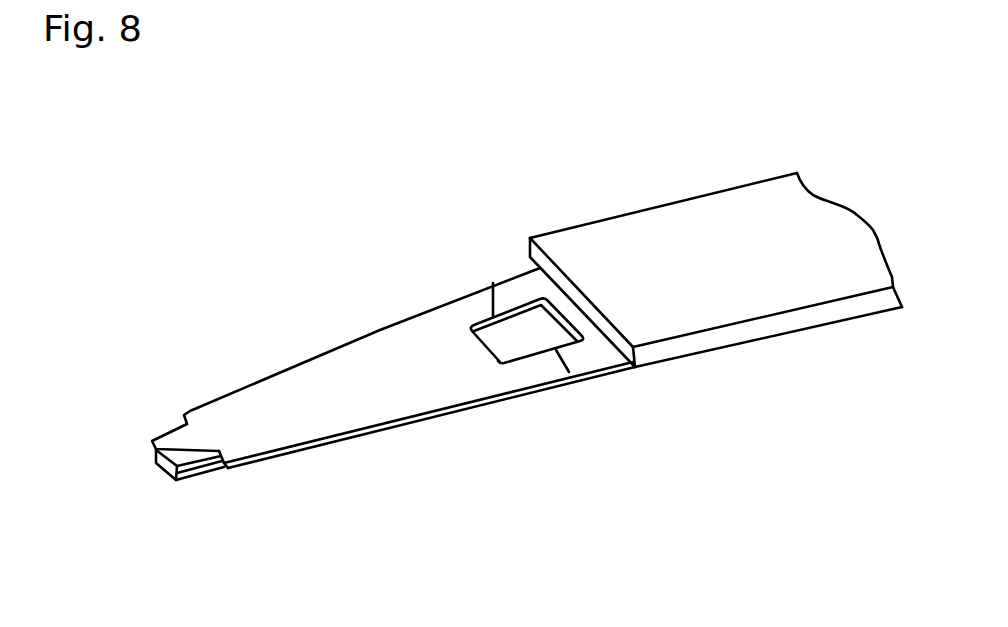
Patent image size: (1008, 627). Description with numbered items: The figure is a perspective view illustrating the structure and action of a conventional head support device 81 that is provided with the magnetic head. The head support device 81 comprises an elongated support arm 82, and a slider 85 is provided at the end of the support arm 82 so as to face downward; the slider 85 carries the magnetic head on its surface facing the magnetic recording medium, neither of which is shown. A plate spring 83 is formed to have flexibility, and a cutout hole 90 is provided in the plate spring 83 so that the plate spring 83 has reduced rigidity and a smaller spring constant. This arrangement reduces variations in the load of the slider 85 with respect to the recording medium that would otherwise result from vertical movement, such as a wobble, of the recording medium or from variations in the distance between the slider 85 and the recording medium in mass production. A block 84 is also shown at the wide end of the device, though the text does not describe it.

The head support device 81 is at (248, 176).
The support arm 82 is at (325, 368).
The plate spring 83 is at (592, 355).
The block 84 is at (667, 220).
The slider 85 is at (185, 477).
The cutout hole 90 is at (517, 330).